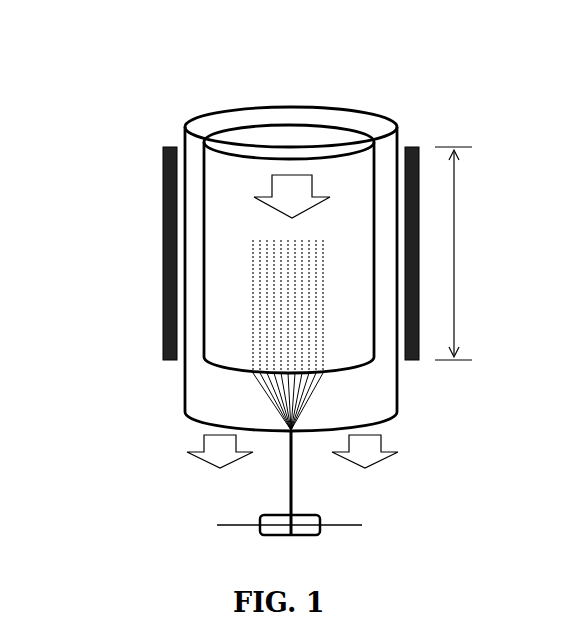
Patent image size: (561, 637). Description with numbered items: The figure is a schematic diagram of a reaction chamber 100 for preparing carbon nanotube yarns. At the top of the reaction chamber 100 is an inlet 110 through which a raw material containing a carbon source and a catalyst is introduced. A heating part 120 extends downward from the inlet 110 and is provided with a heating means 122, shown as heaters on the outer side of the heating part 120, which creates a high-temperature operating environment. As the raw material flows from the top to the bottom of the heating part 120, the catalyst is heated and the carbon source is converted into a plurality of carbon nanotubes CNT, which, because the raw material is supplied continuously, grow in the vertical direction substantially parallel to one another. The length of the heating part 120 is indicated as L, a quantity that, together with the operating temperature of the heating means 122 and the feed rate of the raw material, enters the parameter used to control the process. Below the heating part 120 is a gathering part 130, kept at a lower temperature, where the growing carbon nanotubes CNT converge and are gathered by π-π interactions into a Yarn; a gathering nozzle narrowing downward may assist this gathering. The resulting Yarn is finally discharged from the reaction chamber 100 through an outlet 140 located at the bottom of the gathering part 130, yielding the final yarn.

The reaction chamber 100 is at (176, 108).
The inlet 110 is at (296, 98).
The heating part 120 is at (365, 128).
The heating means 122 is at (163, 245).
The gathering part 130 is at (366, 402).
The outlet 140 is at (189, 433).
The carbon nanotubes CNT is at (253, 310).
The yarn Yarn is at (295, 490).
The length of the heating part L is at (461, 253).